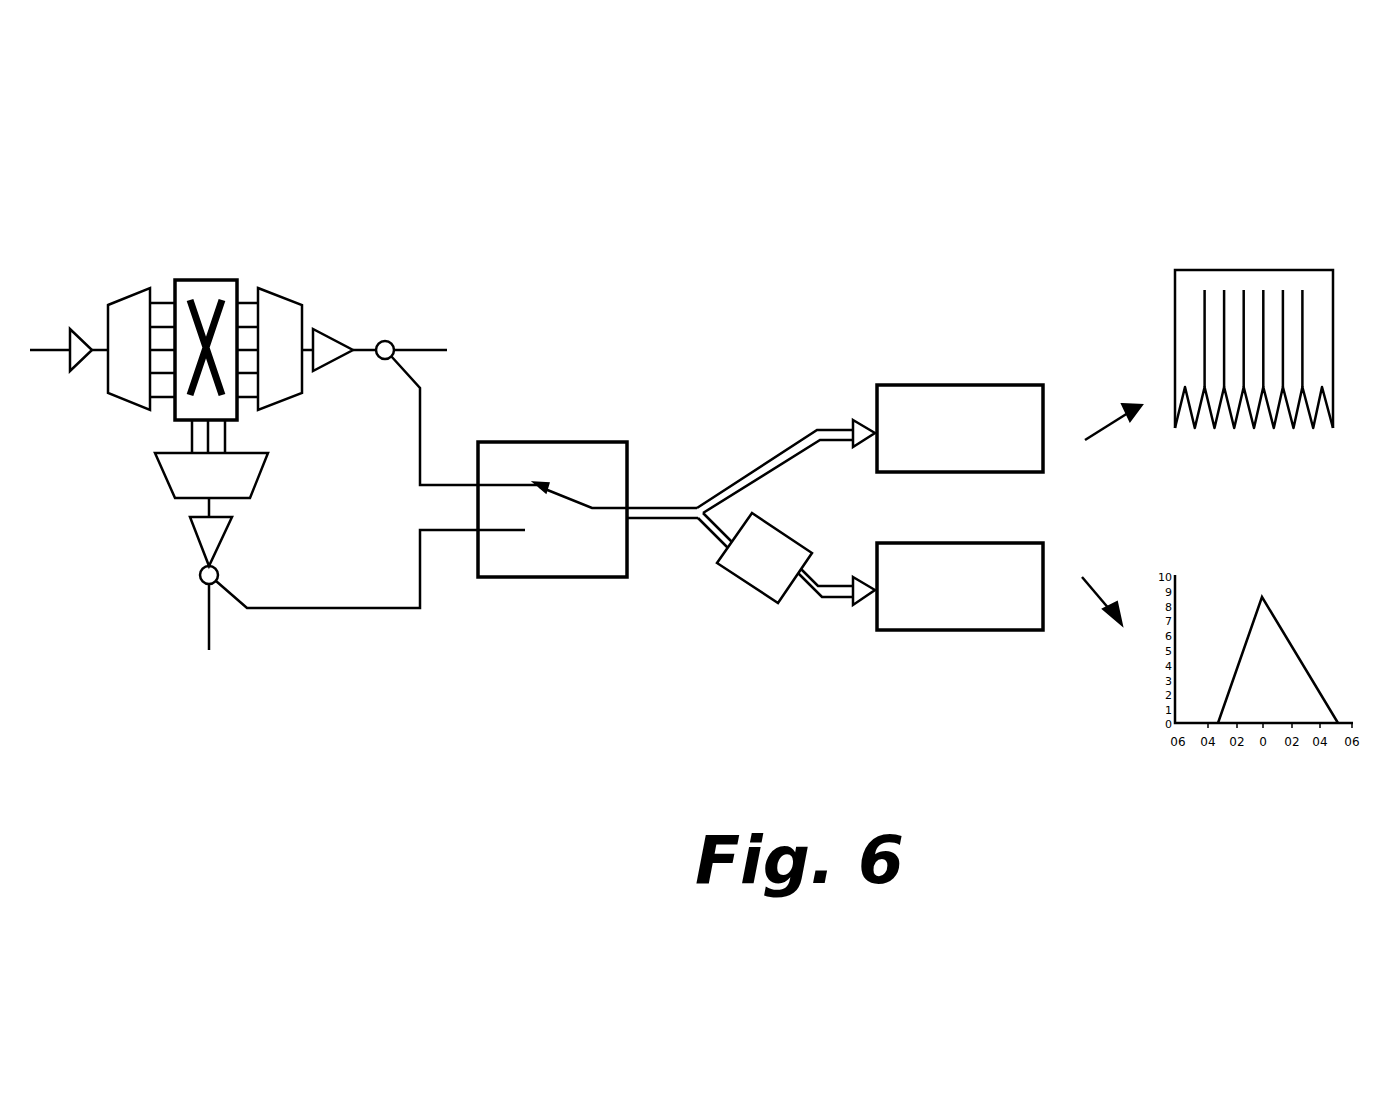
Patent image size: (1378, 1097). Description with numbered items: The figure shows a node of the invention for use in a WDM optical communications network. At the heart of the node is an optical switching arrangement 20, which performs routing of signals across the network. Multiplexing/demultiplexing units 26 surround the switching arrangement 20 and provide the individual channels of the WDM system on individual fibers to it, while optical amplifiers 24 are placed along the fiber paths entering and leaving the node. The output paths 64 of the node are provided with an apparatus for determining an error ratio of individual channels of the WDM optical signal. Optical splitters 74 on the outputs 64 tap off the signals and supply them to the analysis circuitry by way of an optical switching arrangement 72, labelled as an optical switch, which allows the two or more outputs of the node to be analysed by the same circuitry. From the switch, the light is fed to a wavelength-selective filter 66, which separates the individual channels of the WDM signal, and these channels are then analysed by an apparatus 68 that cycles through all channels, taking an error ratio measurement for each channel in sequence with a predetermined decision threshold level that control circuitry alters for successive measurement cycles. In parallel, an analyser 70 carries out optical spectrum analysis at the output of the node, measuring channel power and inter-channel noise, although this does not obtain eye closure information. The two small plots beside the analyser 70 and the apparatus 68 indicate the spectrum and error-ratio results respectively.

The optical switching arrangement 20 is at (217, 288).
The optical amplifiers 24 is at (85, 362).
The multiplexing/demultiplexing units 26 is at (133, 308).
The output paths 64 is at (445, 350).
The wavelength-selective filter 66 is at (753, 582).
The apparatus 68 is at (1012, 632).
The analyser 70 is at (990, 385).
The optical switching arrangement 72 is at (590, 442).
The optical splitters 74 is at (382, 362).